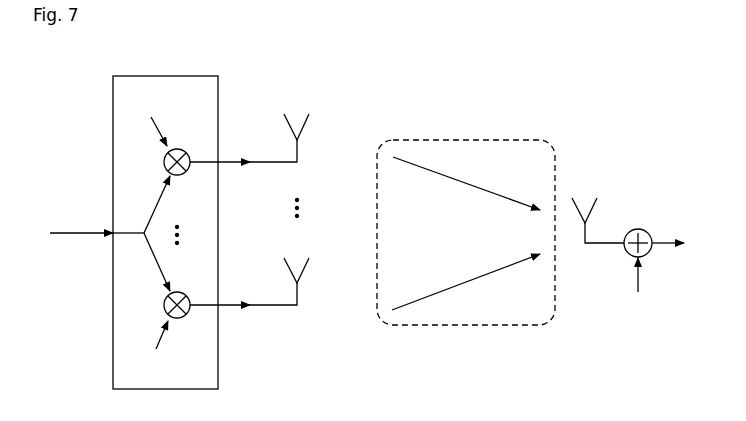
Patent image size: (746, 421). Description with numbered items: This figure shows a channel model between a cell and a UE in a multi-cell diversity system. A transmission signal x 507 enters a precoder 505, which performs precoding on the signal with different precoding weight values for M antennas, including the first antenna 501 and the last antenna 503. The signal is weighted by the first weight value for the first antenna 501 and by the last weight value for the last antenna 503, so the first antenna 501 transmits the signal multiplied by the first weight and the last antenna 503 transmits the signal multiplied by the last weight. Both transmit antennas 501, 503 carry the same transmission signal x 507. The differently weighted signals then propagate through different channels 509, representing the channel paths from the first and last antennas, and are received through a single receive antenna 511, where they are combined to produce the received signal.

The first antenna 501 is at (307, 128).
The last antenna 503 is at (307, 271).
The precoder 505 is at (166, 76).
The transmission signal x 507 is at (68, 230).
The channels 509 is at (462, 140).
The receive antenna 511 is at (597, 210).